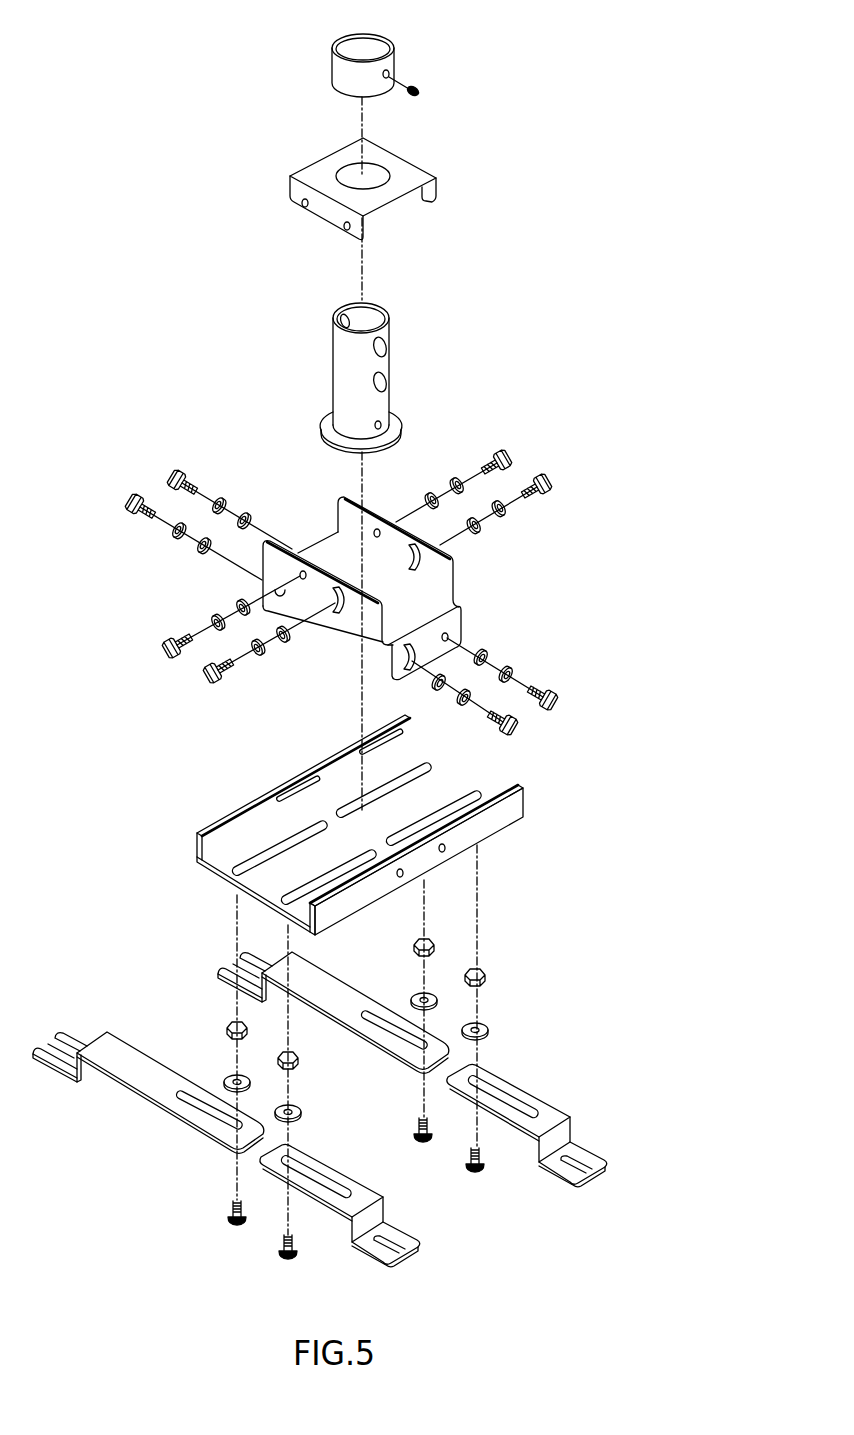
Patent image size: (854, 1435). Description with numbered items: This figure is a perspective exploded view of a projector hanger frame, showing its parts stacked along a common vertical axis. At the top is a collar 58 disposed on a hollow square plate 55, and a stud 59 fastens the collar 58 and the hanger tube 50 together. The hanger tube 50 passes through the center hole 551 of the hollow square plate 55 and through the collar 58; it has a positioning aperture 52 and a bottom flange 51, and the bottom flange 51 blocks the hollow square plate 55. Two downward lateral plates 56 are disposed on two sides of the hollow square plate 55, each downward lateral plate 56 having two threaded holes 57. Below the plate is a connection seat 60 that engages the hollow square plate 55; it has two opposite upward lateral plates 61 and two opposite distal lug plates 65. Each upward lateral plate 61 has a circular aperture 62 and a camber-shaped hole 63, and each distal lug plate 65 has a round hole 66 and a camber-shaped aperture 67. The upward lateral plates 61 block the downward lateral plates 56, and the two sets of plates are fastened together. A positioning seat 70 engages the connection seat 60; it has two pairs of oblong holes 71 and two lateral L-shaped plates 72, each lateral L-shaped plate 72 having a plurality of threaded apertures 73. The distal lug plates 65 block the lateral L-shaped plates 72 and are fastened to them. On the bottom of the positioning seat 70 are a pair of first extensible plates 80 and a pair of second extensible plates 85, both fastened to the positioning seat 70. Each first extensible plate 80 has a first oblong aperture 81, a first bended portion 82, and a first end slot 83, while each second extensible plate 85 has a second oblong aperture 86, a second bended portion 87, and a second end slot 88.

The hanger tube 50 is at (407, 378).
The bottom flange 51 is at (397, 430).
The positioning aperture 52 is at (387, 413).
The hollow square plate 55 is at (359, 205).
The downward lateral plates 56 is at (290, 187).
The threaded holes 57 is at (298, 207).
The center hole 551 is at (372, 180).
The collar 58 is at (395, 43).
The stud 59 is at (420, 91).
The connection seat 60 is at (370, 628).
The upward lateral plates 61 is at (272, 631).
The circular aperture 62 is at (302, 573).
The camber-shaped hole 63 is at (340, 600).
The distal lug plates 65 is at (488, 680).
The round hole 66 is at (450, 638).
The camber-shaped aperture 67 is at (410, 672).
The positioning seat 70 is at (412, 825).
The oblong holes 71 is at (487, 828).
The lateral L-shaped plates 72 is at (477, 847).
The threaded apertures 73 is at (447, 850).
The first extensible plates 80 is at (143, 1063).
The first oblong aperture 81 is at (200, 1110).
The first bended portion 82 is at (78, 1047).
The first end slot 83 is at (43, 1063).
The second extensible plates 85 is at (358, 1209).
The second oblong aperture 86 is at (318, 1175).
The second bended portion 87 is at (343, 1221).
The second end slot 88 is at (393, 1237).